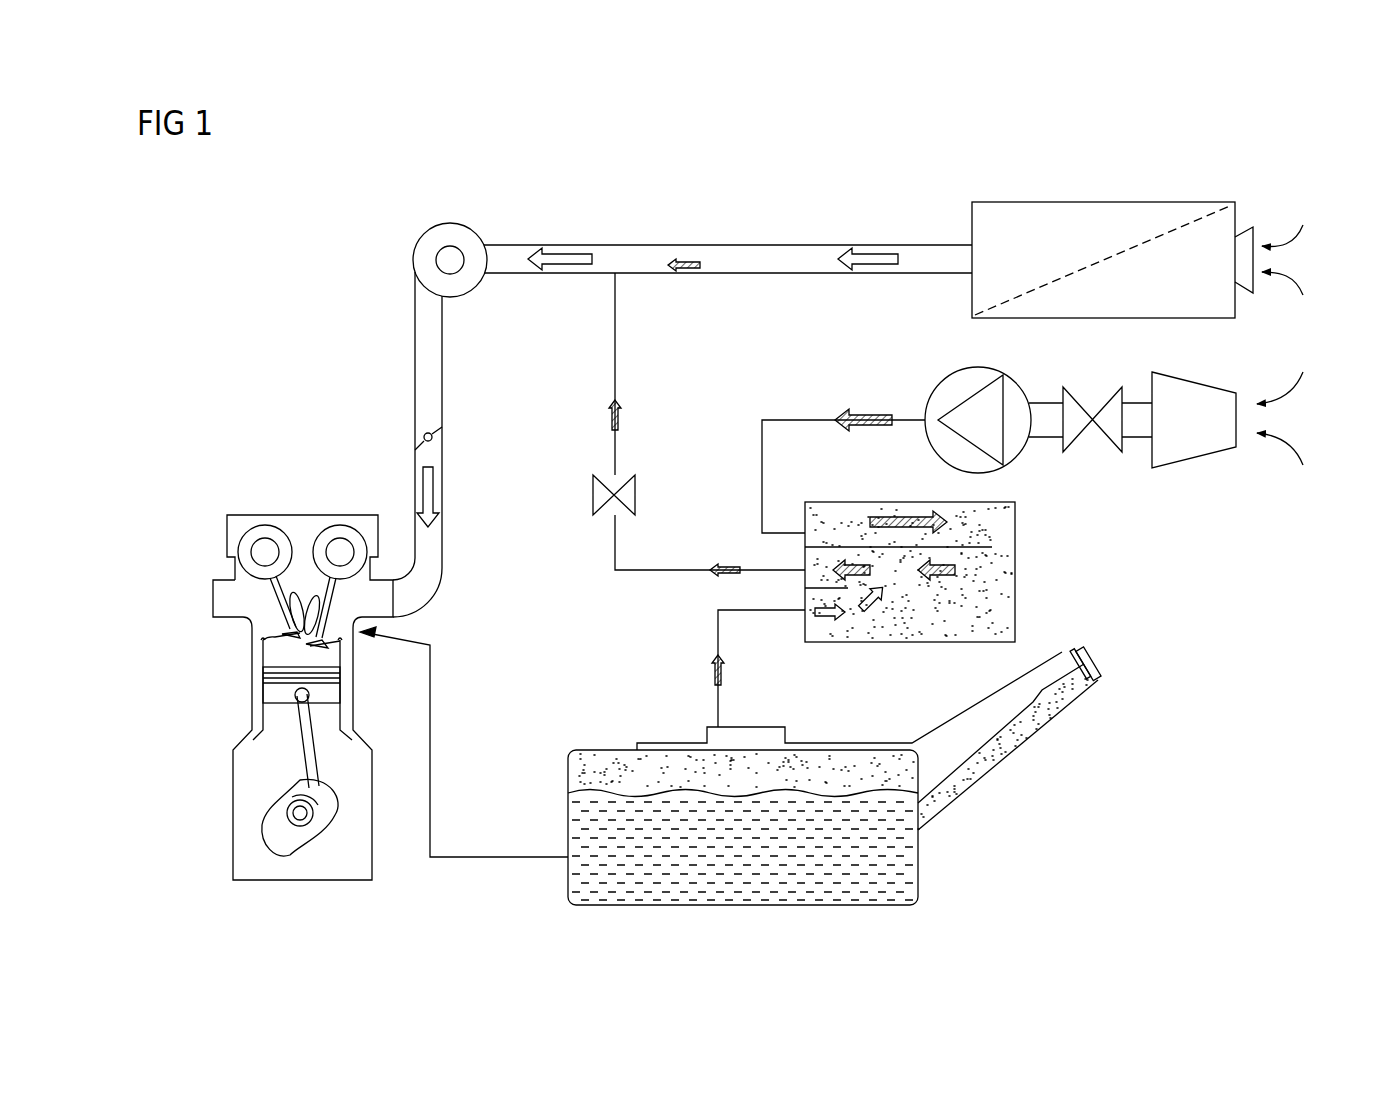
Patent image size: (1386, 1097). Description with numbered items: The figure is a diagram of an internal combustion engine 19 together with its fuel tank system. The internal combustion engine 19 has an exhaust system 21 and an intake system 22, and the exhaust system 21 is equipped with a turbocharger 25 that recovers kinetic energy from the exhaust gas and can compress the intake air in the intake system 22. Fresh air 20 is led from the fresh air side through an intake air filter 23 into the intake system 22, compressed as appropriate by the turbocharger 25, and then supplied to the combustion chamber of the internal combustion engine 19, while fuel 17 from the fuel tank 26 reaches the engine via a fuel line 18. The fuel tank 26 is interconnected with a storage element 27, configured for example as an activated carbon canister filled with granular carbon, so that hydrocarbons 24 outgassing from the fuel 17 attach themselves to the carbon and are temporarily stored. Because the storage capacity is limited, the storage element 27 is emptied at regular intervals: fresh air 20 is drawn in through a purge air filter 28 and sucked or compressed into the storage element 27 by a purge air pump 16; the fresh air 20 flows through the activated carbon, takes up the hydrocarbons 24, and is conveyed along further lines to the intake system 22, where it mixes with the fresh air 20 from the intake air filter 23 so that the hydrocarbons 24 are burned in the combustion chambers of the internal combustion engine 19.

The purge air pump 16 is at (945, 398).
The fuel 17 is at (592, 832).
The fuel line 18 is at (432, 727).
The internal combustion engine 19 is at (232, 790).
The fresh air 20 is at (862, 250).
The exhaust system 21 is at (220, 597).
The intake system 22 is at (744, 258).
The intake air filter 23 is at (1101, 200).
The hydrocarbons 24 is at (1000, 588).
The turbocharger 25 is at (463, 280).
The fuel tank 26 is at (920, 862).
The storage element 27 is at (1018, 523).
The purge air filter 28 is at (1190, 445).